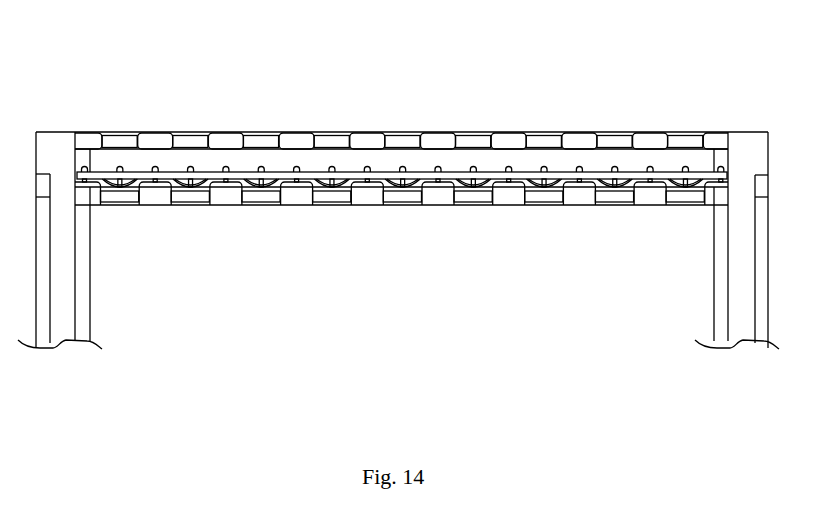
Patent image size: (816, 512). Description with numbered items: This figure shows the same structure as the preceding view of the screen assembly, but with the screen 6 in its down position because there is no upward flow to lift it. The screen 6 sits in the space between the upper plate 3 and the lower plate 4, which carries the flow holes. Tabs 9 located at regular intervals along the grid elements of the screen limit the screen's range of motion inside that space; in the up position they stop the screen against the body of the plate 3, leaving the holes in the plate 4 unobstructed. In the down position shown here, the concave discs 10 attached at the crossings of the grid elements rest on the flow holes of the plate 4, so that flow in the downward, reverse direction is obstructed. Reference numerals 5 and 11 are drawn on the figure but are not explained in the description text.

The plate 3 is at (587, 112).
The plate 4 is at (577, 208).
The upper beam 5 is at (475, 132).
The screen 6 is at (665, 173).
The tabs 9 is at (366, 168).
The concave disks 10 is at (473, 182).
The lower support rail 11 is at (337, 205).